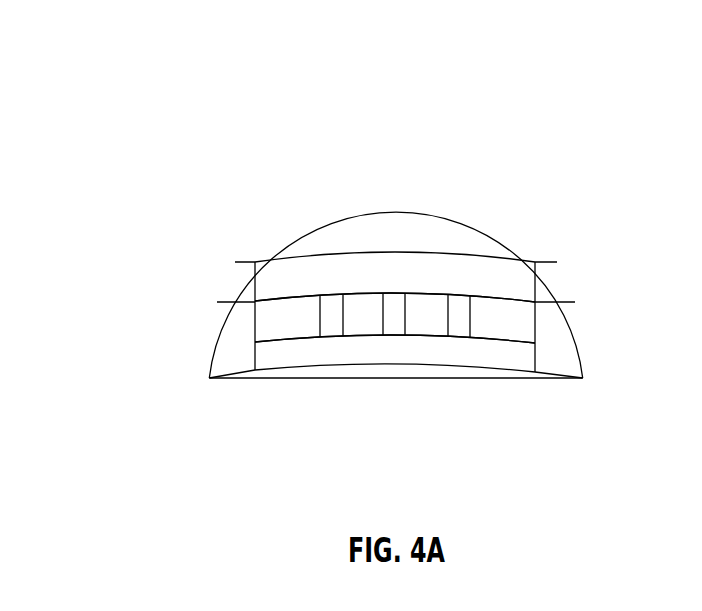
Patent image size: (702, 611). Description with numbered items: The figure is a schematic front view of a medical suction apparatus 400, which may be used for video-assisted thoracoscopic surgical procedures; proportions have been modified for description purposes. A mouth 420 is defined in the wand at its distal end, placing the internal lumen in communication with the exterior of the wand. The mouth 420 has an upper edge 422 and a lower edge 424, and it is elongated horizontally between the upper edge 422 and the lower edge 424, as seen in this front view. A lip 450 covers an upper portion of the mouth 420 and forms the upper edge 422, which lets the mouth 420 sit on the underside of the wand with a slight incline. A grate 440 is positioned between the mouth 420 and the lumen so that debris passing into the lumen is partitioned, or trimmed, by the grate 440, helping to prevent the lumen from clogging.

The medical suction apparatus 400 is at (117, 68).
The lip 450 is at (365, 183).
The upper edge 422 is at (365, 267).
The mouth 420 is at (287, 309).
The grate 440 is at (393, 323).
The lower edge 424 is at (283, 353).